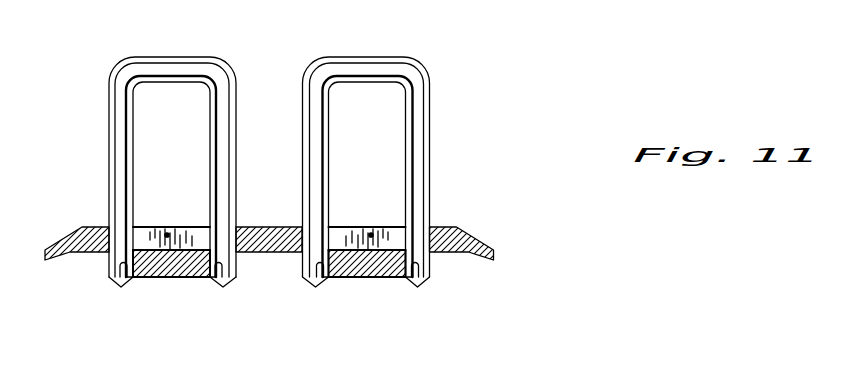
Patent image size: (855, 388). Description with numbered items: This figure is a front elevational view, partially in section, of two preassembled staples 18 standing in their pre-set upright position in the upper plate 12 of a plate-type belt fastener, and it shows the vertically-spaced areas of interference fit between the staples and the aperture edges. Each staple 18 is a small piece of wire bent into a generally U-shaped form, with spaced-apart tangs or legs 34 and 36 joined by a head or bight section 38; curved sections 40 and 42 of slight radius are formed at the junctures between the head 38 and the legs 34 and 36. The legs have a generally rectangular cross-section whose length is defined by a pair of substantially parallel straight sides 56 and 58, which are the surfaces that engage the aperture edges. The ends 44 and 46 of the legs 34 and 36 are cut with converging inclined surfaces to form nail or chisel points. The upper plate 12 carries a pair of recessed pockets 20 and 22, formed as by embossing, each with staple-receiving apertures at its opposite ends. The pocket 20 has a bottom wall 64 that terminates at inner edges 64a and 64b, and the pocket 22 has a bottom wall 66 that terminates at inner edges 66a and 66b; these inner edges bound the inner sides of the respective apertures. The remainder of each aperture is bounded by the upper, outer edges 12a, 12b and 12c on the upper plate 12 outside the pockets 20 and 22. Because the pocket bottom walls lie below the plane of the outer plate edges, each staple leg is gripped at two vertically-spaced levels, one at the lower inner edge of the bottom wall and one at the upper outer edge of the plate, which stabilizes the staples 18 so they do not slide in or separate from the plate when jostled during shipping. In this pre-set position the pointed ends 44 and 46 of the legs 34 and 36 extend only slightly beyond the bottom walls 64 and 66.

The upper plate 12 is at (267, 253).
The upper, outer edge 12a is at (112, 230).
The upper, outer edge 12b is at (235, 237).
The upper, outer edge 12c is at (305, 230).
The staple 18 is at (92, 93).
The recessed pocket 20 is at (167, 233).
The recessed pocket 22 is at (370, 233).
The leg 34 is at (115, 163).
The leg 36 is at (300, 155).
The head 38 is at (172, 58).
The curved section 40 is at (138, 78).
The curved section 42 is at (213, 77).
The leg end 44 is at (108, 290).
The leg end 46 is at (305, 298).
The straight side 56 is at (210, 150).
The straight side 58 is at (108, 130).
The bottom wall 64 is at (173, 277).
The inner edge 64a is at (118, 285).
The inner edge 64b is at (222, 287).
The bottom wall 66 is at (367, 277).
The inner edge 66a is at (313, 287).
The inner edge 66b is at (412, 287).